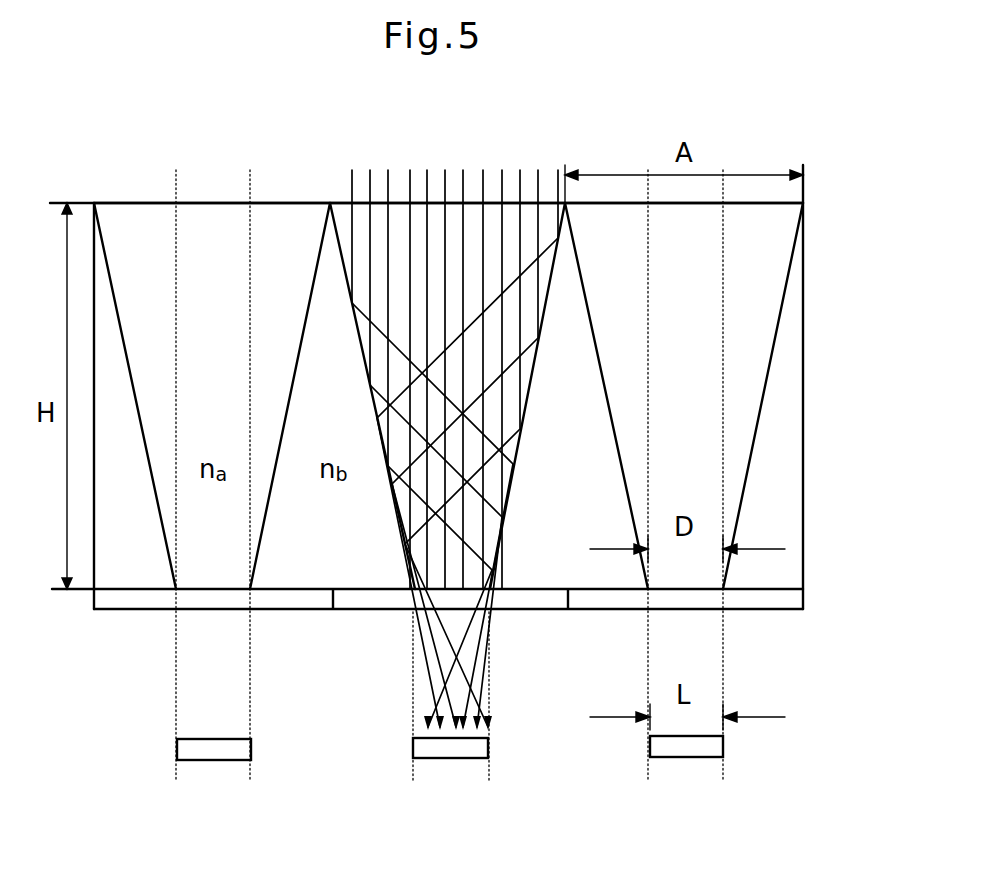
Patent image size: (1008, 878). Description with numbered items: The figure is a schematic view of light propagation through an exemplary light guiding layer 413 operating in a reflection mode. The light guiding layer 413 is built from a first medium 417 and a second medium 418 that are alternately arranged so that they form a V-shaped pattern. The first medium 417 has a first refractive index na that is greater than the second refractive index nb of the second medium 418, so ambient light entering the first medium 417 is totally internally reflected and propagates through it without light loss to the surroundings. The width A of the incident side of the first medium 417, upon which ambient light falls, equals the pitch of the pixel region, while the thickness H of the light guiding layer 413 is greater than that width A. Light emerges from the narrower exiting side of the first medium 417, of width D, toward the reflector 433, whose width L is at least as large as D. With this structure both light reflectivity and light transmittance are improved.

The light guiding layer 413 is at (810, 203).
The first medium 417 is at (287, 228).
The second medium 418 is at (363, 567).
The reflector 433 is at (452, 758).